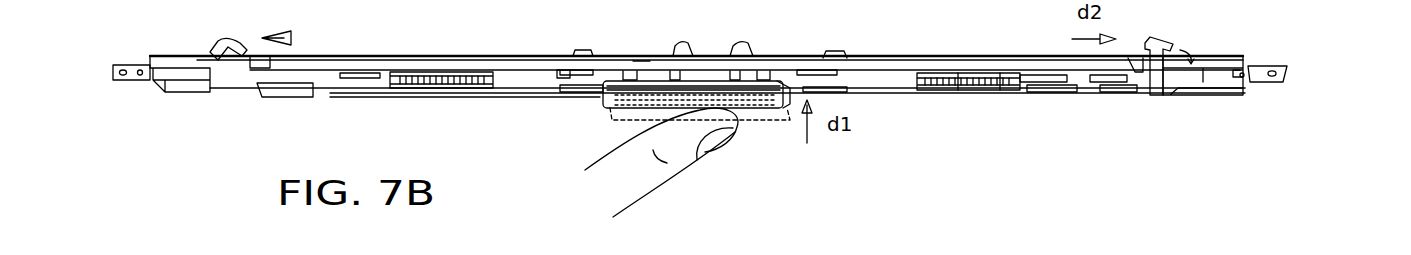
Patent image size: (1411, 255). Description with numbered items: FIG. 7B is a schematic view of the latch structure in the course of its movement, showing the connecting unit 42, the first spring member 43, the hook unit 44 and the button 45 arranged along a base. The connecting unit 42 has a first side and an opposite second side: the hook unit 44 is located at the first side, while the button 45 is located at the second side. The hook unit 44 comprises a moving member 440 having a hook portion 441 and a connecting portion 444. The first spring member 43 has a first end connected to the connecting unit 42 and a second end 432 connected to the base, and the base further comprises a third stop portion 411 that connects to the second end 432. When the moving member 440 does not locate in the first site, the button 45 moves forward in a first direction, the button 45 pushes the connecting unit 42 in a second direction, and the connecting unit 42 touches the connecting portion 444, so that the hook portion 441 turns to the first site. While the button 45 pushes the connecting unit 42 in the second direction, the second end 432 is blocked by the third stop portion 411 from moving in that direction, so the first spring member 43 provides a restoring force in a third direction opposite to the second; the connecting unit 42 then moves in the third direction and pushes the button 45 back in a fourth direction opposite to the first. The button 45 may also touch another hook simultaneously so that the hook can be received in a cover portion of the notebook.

The connecting unit 42 is at (1078, 80).
The first spring member 43 is at (1000, 95).
The hook unit 44 is at (1293, 188).
The button 45 is at (753, 103).
The third stop portion 411 is at (958, 95).
The second end 432 is at (935, 95).
The moving member 440 is at (1320, 162).
The hook portion 441 is at (1163, 43).
The connecting portion 444 is at (1163, 67).